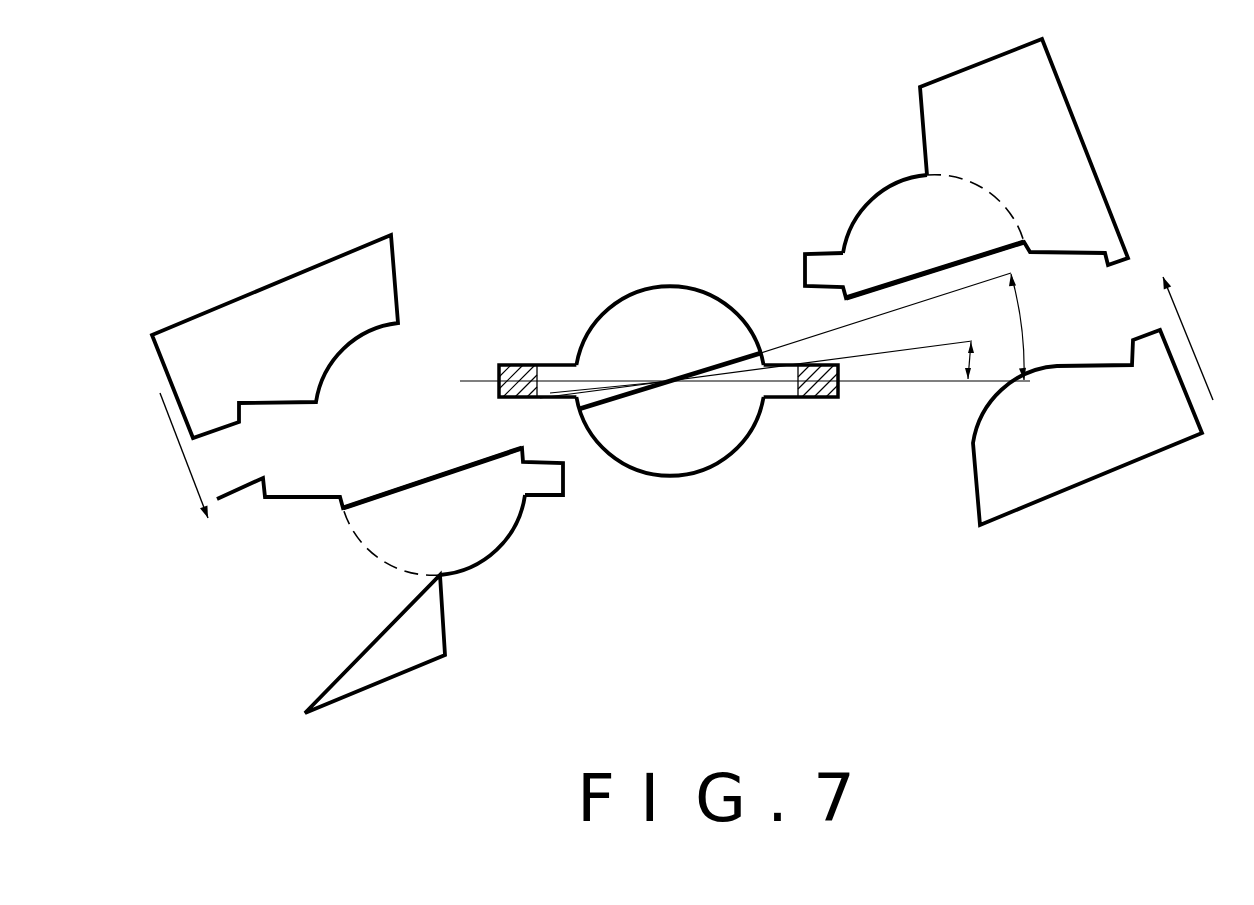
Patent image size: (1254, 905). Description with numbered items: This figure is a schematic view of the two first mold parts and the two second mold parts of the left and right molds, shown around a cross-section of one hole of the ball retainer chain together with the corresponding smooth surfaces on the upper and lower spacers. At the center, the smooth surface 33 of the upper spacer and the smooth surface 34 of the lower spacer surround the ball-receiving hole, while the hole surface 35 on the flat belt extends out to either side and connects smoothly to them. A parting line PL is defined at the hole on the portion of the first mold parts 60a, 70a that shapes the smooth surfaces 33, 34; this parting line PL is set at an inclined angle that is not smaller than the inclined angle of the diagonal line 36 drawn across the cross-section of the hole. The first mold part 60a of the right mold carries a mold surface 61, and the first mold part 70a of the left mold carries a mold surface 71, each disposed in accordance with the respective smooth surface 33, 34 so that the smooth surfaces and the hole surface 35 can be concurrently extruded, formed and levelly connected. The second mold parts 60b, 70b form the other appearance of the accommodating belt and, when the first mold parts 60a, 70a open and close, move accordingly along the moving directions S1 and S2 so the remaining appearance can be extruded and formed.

The smooth surface 33 is at (668, 325).
The smooth surface 34 is at (655, 442).
The hole surface 35 is at (552, 373).
The diagonal line 36 is at (763, 393).
The first mold part 60a is at (991, 168).
The second mold part 60b is at (1073, 473).
The mold surface 61 is at (883, 228).
The first mold part 70a is at (395, 580).
The second mold part 70b is at (264, 357).
The mold surface 71 is at (479, 525).
The parting line PL is at (725, 358).
The moving direction S1 is at (1198, 338).
The moving direction S2 is at (171, 455).